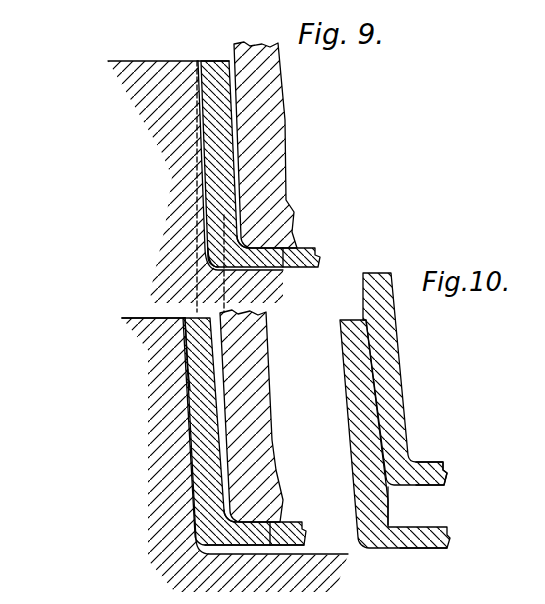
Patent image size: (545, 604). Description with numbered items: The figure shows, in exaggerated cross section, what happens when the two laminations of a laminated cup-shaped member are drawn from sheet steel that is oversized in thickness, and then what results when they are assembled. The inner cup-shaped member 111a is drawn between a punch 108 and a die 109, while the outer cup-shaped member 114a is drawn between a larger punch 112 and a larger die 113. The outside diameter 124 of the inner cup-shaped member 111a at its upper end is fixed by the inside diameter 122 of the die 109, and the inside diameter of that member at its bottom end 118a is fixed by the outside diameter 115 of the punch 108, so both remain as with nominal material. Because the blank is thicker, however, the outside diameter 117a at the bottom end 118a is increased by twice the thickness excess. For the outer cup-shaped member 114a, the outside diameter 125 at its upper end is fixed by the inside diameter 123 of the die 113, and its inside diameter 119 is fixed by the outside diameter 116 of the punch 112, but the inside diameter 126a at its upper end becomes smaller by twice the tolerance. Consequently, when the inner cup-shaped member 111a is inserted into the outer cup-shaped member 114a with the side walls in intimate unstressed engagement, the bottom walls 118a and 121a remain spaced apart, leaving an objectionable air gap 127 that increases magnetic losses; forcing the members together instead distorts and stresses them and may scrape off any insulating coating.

In FIG. 9, the punch 108 is at (267, 122).
In FIG. 9, the die 109 is at (131, 74).
In FIG. 9, the inner cup-shaped member 111a is at (228, 193).
In FIG. 10, the inner cup-shaped member 111a is at (387, 335).
In FIG. 9, the punch 112 is at (261, 360).
In FIG. 9, the die 113 is at (162, 350).
In FIG. 9, the outer cup-shaped member 114a is at (209, 440).
In FIG. 10, the outer cup-shaped member 114a is at (360, 372).
In FIG. 9, the outside diameter of the smaller punch 115 is at (262, 236).
In FIG. 9, the outside diameter of the larger punch 116 is at (255, 513).
In FIG. 9, the outside diameter of the inner cup-shaped member at its bottom end 117a is at (223, 260).
In FIG. 9, the bottom end of the inner cup-shaped member 118a is at (297, 268).
In FIG. 10, the bottom end of the inner cup-shaped member 118a is at (443, 470).
In FIG. 9, the inside diameter of the outer cup-shaped member 119 is at (240, 515).
In FIG. 9, the bottom wall of the outer cup-shaped member 121a is at (280, 546).
In FIG. 10, the bottom wall of the outer cup-shaped member 121a is at (432, 543).
In FIG. 9, the inside diameter of the smaller die 122 is at (197, 62).
In FIG. 9, the inside diameter of the larger die 123 is at (160, 318).
In FIG. 9, the outside diameter of the inner cup-shaped member at its upper end 124 is at (204, 117).
In FIG. 9, the outside diameter of the outer cup-shaped member at its upper end 125 is at (184, 365).
In FIG. 9, the inside diameter of the outer cup-shaped member at its upper end 126a is at (184, 378).
In FIG. 10, the air gap 127 is at (408, 505).